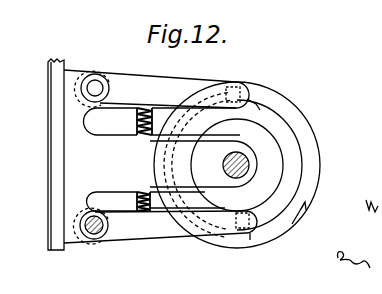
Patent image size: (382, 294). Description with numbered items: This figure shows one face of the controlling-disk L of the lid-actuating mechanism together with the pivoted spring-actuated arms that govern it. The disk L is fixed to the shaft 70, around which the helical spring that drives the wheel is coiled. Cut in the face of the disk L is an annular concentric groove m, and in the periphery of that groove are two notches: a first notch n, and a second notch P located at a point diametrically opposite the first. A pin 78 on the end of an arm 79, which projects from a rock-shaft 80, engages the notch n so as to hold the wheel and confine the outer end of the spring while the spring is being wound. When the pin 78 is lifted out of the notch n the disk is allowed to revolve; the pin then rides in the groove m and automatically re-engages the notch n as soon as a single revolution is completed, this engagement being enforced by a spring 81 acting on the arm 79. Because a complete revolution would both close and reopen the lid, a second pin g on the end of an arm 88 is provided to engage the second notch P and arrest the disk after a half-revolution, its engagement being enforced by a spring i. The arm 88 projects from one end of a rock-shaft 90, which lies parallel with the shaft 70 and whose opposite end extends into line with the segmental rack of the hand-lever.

The shaft 70 is at (243, 160).
The pin 78 is at (246, 213).
The arm 79 is at (160, 227).
The rock-shaft 80 is at (94, 228).
The spring 81 is at (156, 201).
The arm 88 is at (156, 89).
The rock-shaft 90 is at (95, 86).
The pin g is at (233, 88).
The spring i is at (162, 121).
The notch P is at (253, 110).
The controlling-disk L is at (237, 165).
The annular concentric groove m is at (269, 165).
The notch n is at (251, 236).